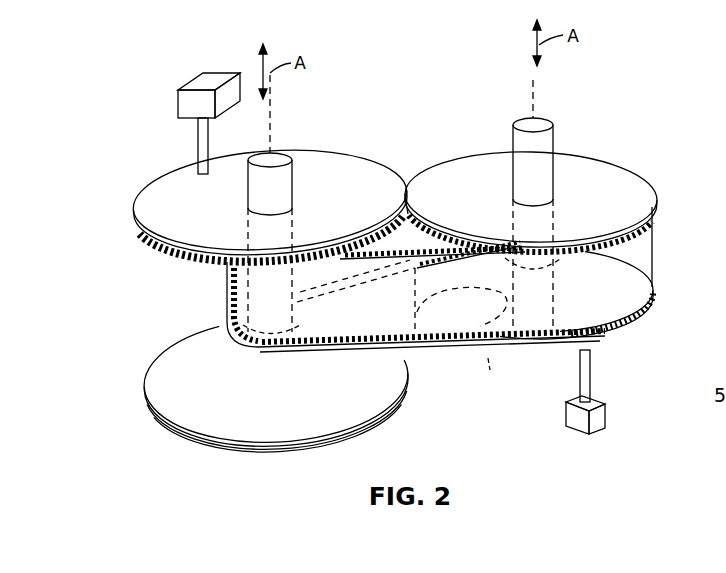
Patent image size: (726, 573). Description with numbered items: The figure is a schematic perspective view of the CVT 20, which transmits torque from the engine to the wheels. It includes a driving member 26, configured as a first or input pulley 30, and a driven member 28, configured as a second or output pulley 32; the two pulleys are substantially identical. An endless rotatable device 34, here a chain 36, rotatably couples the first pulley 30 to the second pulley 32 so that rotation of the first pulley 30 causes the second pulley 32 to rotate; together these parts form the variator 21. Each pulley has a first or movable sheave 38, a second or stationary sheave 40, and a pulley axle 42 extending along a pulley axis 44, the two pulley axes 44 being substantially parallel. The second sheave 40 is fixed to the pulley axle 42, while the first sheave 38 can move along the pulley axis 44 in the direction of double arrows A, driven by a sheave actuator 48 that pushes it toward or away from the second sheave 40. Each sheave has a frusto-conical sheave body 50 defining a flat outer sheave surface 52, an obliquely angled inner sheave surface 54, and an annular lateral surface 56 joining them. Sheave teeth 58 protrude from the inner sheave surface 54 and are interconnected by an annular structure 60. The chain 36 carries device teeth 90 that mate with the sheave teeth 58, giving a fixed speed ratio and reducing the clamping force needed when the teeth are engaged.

The CVT 20 is at (403, 186).
The variator 21 is at (155, 316).
The driving member 26 is at (172, 152).
The driven member 28 is at (600, 148).
The first pulley 30 is at (153, 190).
The second pulley 32 is at (560, 160).
The endless rotatable device 34 is at (433, 307).
The chain 36 is at (390, 290).
The first sheave 38 is at (147, 223).
The second sheave 40 is at (637, 188).
The pulley axle 42 is at (286, 196).
The pulley axis 44 is at (270, 124).
The sheave actuator 48 is at (205, 84).
The sheave body 50 is at (172, 232).
The outer sheave surface 52 is at (328, 160).
The inner sheave surface 54 is at (182, 368).
The annular lateral surface 56 is at (170, 427).
The sheave teeth 58 is at (490, 373).
The annular structure 60 is at (172, 258).
The device teeth 90 is at (443, 351).